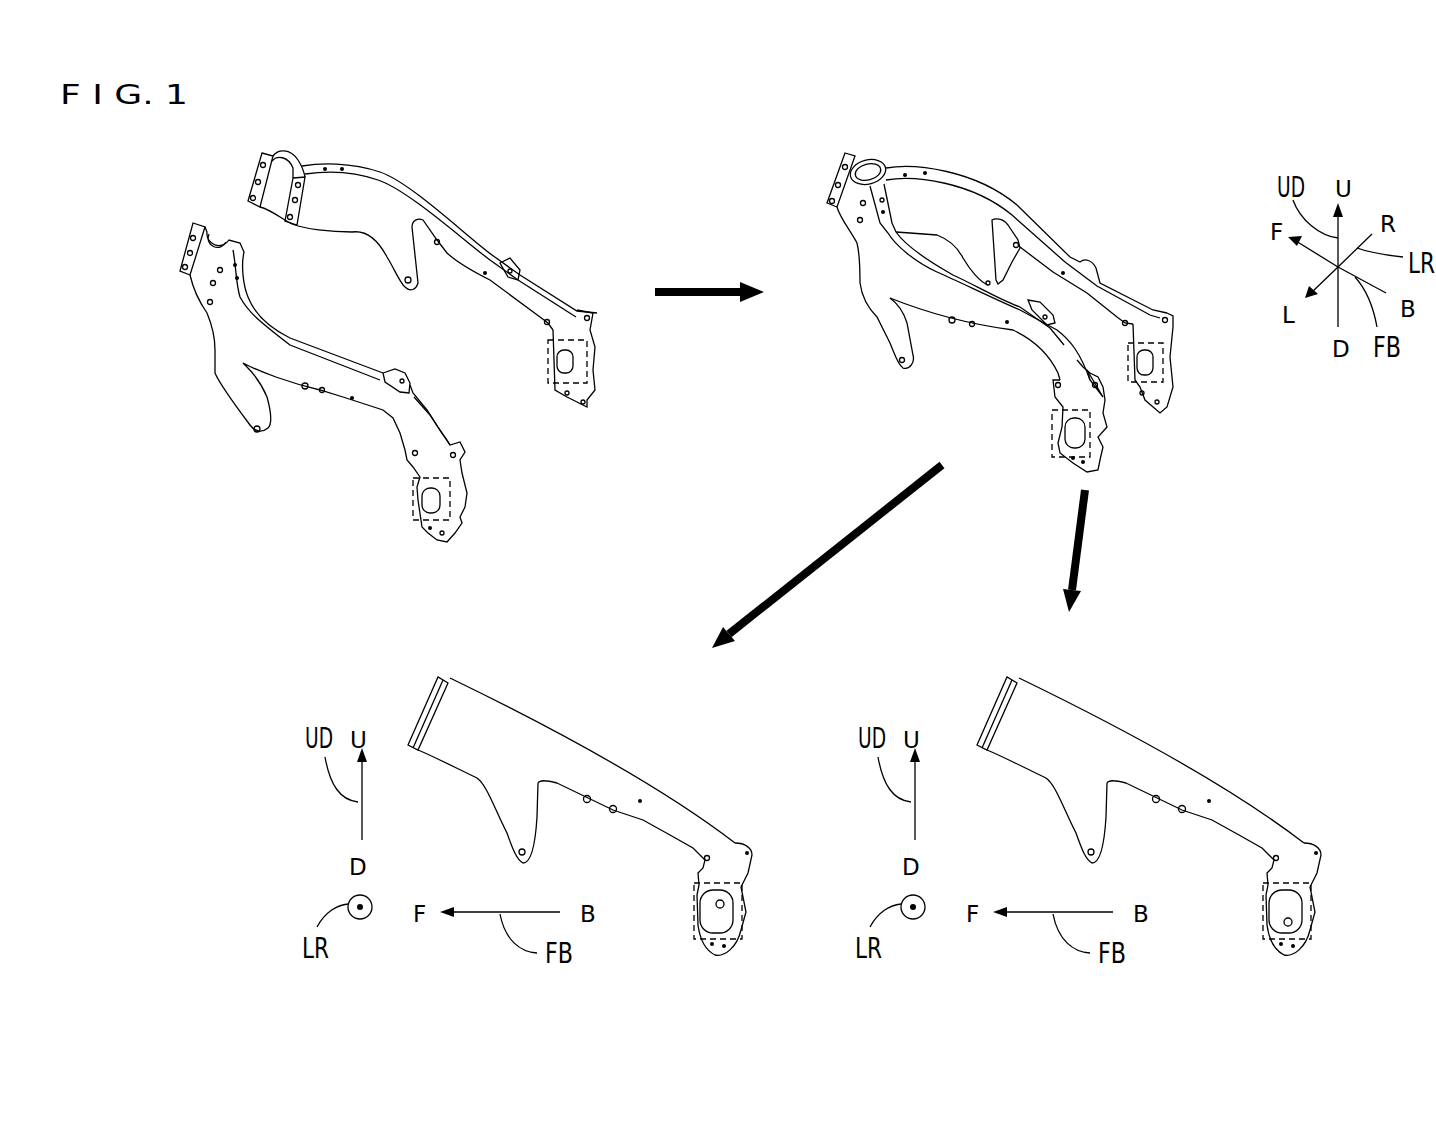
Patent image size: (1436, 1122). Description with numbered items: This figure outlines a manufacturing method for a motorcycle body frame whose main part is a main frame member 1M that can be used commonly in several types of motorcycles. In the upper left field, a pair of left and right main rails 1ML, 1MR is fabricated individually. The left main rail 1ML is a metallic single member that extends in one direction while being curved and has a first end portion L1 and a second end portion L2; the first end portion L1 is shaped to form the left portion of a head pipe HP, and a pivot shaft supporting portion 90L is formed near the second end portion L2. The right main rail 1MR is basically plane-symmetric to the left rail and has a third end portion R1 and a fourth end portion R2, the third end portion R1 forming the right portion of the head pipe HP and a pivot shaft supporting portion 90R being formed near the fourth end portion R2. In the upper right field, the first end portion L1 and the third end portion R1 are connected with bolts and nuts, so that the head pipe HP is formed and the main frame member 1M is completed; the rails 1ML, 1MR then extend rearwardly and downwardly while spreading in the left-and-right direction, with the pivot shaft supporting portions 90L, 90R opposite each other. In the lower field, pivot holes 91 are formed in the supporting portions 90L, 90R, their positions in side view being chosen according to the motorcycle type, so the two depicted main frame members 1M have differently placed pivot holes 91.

The main frame member 1M is at (1090, 210).
The right main rail 1MR is at (393, 173).
The left main rail 1ML is at (247, 352).
The first end portion L1 is at (182, 260).
The second end portion L2 is at (450, 540).
The third end portion R1 is at (250, 195).
The fourth end portion R2 is at (596, 397).
The pivot shaft supporting portion 90L is at (405, 492).
The pivot shaft supporting portion 90R is at (598, 360).
The pivot hole 91 is at (725, 903).
The head pipe HP is at (850, 184).